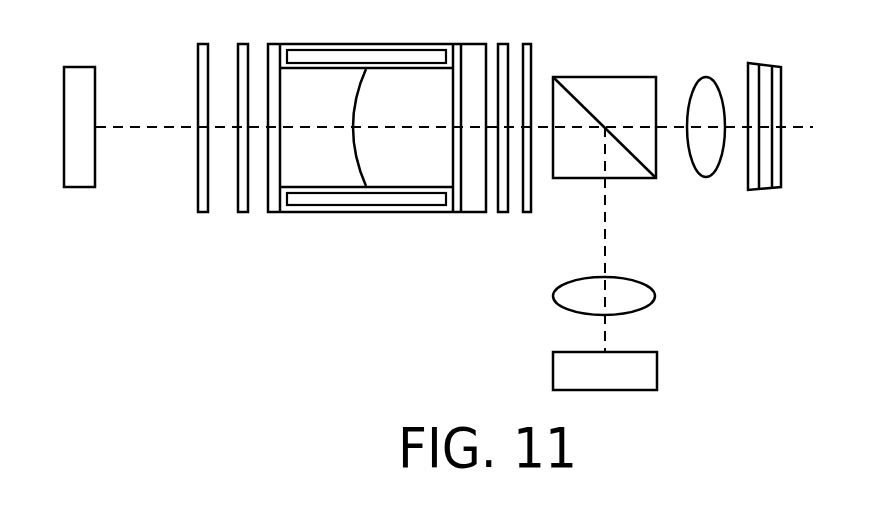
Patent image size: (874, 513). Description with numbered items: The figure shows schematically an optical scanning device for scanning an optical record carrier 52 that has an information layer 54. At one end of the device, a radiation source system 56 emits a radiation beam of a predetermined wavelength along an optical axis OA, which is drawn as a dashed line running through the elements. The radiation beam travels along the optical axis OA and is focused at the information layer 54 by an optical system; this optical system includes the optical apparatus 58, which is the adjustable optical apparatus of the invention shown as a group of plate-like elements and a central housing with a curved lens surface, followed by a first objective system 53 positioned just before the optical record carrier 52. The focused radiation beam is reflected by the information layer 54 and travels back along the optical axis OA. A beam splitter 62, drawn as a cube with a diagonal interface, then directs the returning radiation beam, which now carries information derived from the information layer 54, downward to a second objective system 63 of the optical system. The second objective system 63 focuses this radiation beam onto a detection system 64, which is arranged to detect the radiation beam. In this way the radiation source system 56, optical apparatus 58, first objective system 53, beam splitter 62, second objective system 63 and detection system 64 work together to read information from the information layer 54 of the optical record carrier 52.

The optical axis OA is at (158, 128).
The optical record carrier 52 is at (783, 81).
The first objective system 53 is at (705, 178).
The information layer 54 is at (767, 103).
The radiation source system 56 is at (80, 188).
The optical apparatus 58 is at (198, 237).
The beam splitter 62 is at (604, 76).
The second objective system 63 is at (657, 296).
The detection system 64 is at (658, 370).